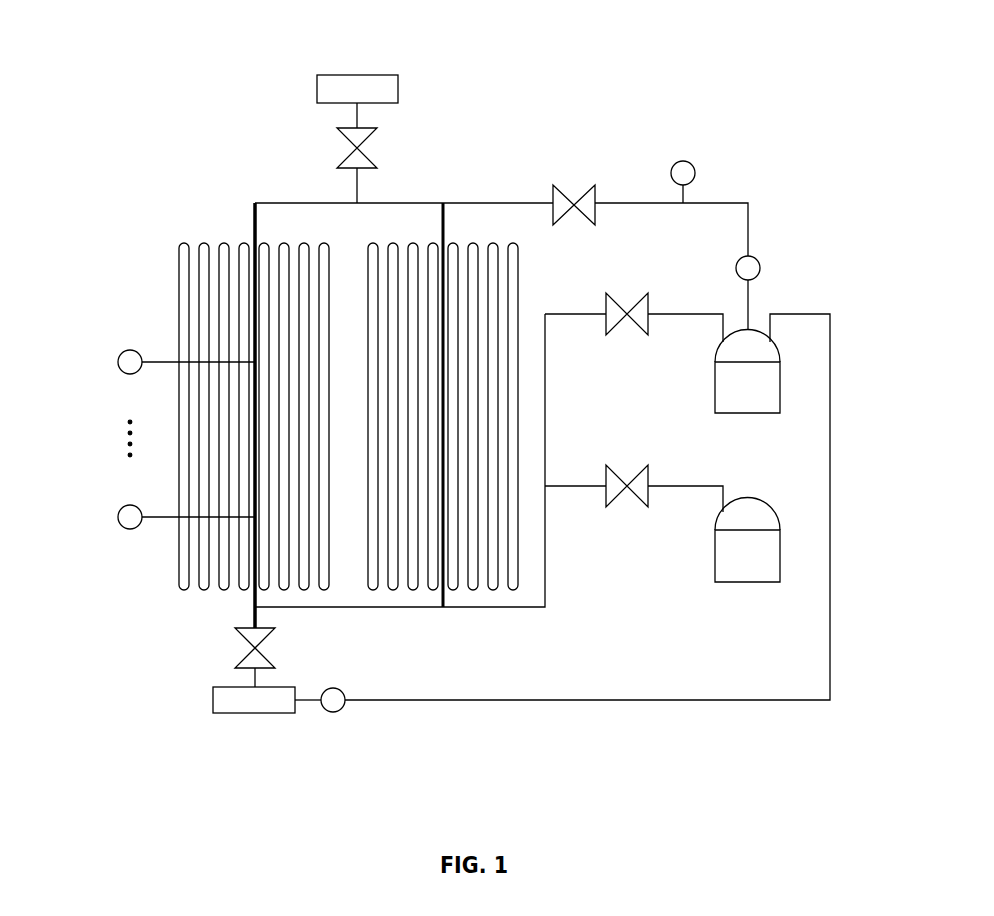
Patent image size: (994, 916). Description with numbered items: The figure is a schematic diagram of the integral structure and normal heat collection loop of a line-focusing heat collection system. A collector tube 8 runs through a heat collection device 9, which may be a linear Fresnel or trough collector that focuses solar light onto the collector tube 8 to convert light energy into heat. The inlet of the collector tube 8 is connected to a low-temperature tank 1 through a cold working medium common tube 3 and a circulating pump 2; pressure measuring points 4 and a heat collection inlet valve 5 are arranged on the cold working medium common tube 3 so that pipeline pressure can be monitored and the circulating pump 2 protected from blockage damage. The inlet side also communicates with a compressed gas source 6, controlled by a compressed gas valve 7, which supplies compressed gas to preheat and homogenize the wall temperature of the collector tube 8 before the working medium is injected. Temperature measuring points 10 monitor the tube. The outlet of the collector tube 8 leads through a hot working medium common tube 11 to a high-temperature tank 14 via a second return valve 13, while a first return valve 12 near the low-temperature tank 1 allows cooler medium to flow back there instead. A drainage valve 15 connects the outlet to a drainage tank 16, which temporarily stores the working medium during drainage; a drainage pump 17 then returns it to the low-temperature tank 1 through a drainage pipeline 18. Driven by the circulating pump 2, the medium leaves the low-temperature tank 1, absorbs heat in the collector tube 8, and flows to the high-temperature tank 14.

The low-temperature tank 1 is at (748, 390).
The circulating pump 2 is at (760, 267).
The cold working medium common tube 3 is at (723, 203).
The pressure measuring point 4 is at (690, 160).
The heat collection inlet valve 5 is at (574, 205).
The compressed gas source 6 is at (363, 88).
The compressed gas valve 7 is at (357, 148).
The collector tube 8 is at (253, 228).
The heat collection device 9 is at (179, 277).
The temperature measuring point 10 is at (118, 357).
The hot working medium common tube 11 is at (545, 590).
The first return valve 12 is at (627, 313).
The second return valve 13 is at (627, 486).
The high-temperature tank 14 is at (767, 550).
The drainage valve 15 is at (255, 648).
The drainage tank 16 is at (235, 705).
The drainage pump 17 is at (340, 710).
The drainage pipeline 18 is at (830, 660).